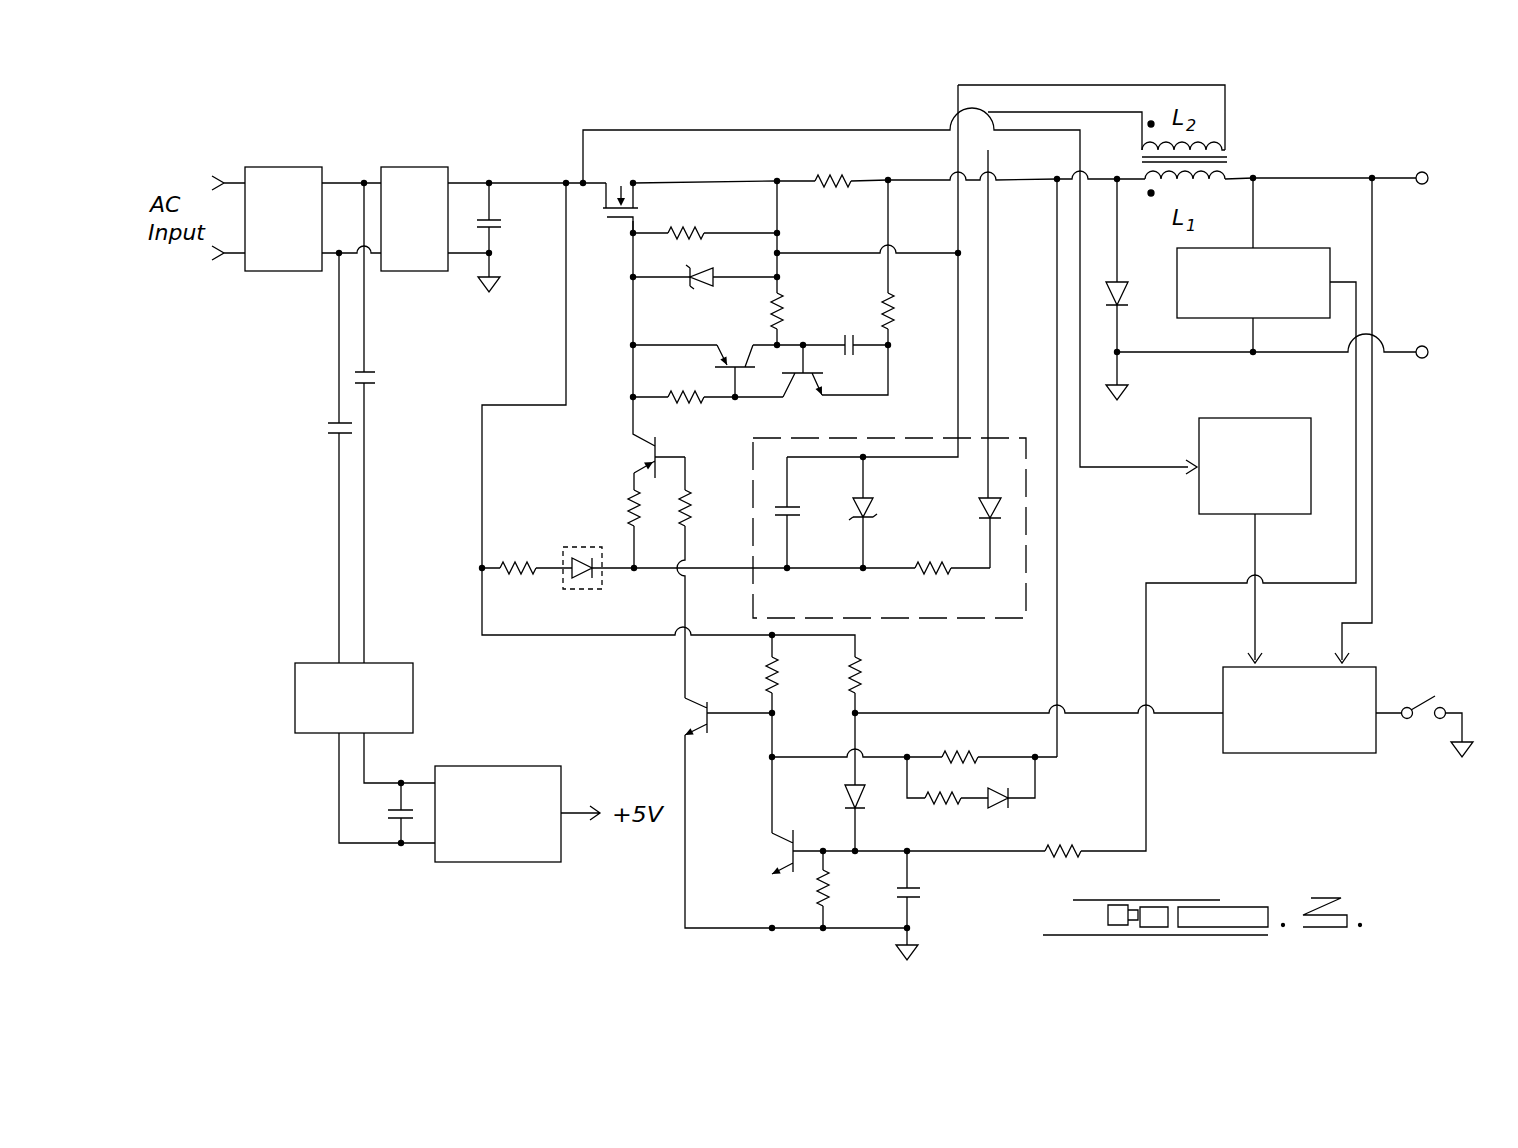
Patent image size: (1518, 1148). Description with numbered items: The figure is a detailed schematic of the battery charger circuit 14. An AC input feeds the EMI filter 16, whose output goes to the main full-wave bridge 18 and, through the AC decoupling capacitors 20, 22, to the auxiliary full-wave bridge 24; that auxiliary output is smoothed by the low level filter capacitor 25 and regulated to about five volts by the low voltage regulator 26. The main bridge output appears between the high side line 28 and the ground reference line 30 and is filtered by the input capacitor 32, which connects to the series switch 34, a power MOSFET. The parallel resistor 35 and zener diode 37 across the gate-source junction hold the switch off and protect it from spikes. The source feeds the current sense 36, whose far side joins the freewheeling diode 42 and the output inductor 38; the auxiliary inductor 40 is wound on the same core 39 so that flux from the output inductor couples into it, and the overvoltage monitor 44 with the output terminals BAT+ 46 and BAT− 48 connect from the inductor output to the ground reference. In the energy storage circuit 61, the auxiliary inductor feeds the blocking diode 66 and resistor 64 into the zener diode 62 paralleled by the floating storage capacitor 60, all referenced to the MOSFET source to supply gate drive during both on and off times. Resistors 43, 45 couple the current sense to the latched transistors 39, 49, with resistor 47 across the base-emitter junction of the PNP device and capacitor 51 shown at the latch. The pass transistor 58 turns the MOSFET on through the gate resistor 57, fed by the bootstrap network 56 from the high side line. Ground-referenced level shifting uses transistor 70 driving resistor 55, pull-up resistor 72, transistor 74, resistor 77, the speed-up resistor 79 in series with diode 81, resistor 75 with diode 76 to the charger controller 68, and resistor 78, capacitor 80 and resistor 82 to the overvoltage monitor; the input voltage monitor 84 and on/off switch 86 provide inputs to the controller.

The battery charger circuit 14 is at (513, 100).
The EMI filter 16 is at (250, 271).
The main full-wave bridge 18 is at (403, 271).
The AC decoupling capacitor 20 is at (378, 378).
The AC decoupling capacitor 22 is at (328, 428).
The auxiliary full-wave bridge 24 is at (302, 663).
The low level filter capacitor 25 is at (388, 815).
The low voltage regulator 26 is at (517, 766).
The high side line 28 is at (489, 181).
The ground reference line 30 is at (493, 253).
The input capacitor 32 is at (502, 220).
The series switch 34 is at (610, 218).
The resistor 35 is at (688, 233).
The current sense 36 is at (845, 182).
The zener diode 37 is at (712, 282).
The output inductor L1 38 is at (1220, 180).
The core / PNP transistor 39 is at (1230, 158).
The auxiliary inductor L2 40 is at (1228, 145).
The freewheeling diode 42 is at (1120, 285).
The resistor 43 is at (780, 305).
The overvoltage monitor 44 is at (1315, 248).
The resistor 45 is at (893, 308).
The BAT+ output terminal 46 is at (1420, 172).
The resistor 47 is at (688, 400).
The BAT− output terminal 48 is at (1422, 346).
The NPN transistor 49 is at (797, 392).
The capacitor 51 is at (848, 336).
The resistor 55 is at (690, 512).
The bootstrap network 56 is at (510, 560).
The gate resistor 57 is at (628, 511).
The pass transistor 58 is at (640, 450).
The floating storage capacitor 60 is at (800, 512).
The energy storage circuit 61 is at (1012, 618).
The zener diode 62 is at (875, 510).
The resistor 64 is at (920, 560).
The blocking diode 66 is at (982, 510).
The charger controller 68 is at (1333, 753).
The NPN transistor 70 is at (685, 700).
The pull-up resistor 72 is at (768, 672).
The NPN transistor 74 is at (778, 838).
The resistor 75 is at (862, 665).
The diode 76 is at (848, 798).
The resistor 77 is at (975, 757).
The resistor 78 is at (830, 890).
The speed-up resistor 79 is at (945, 798).
The capacitor 80 is at (920, 895).
The diode 81 is at (1015, 798).
The resistor 82 is at (1060, 848).
The input voltage monitor 84 is at (1250, 418).
The on/off switch 86 is at (1418, 705).